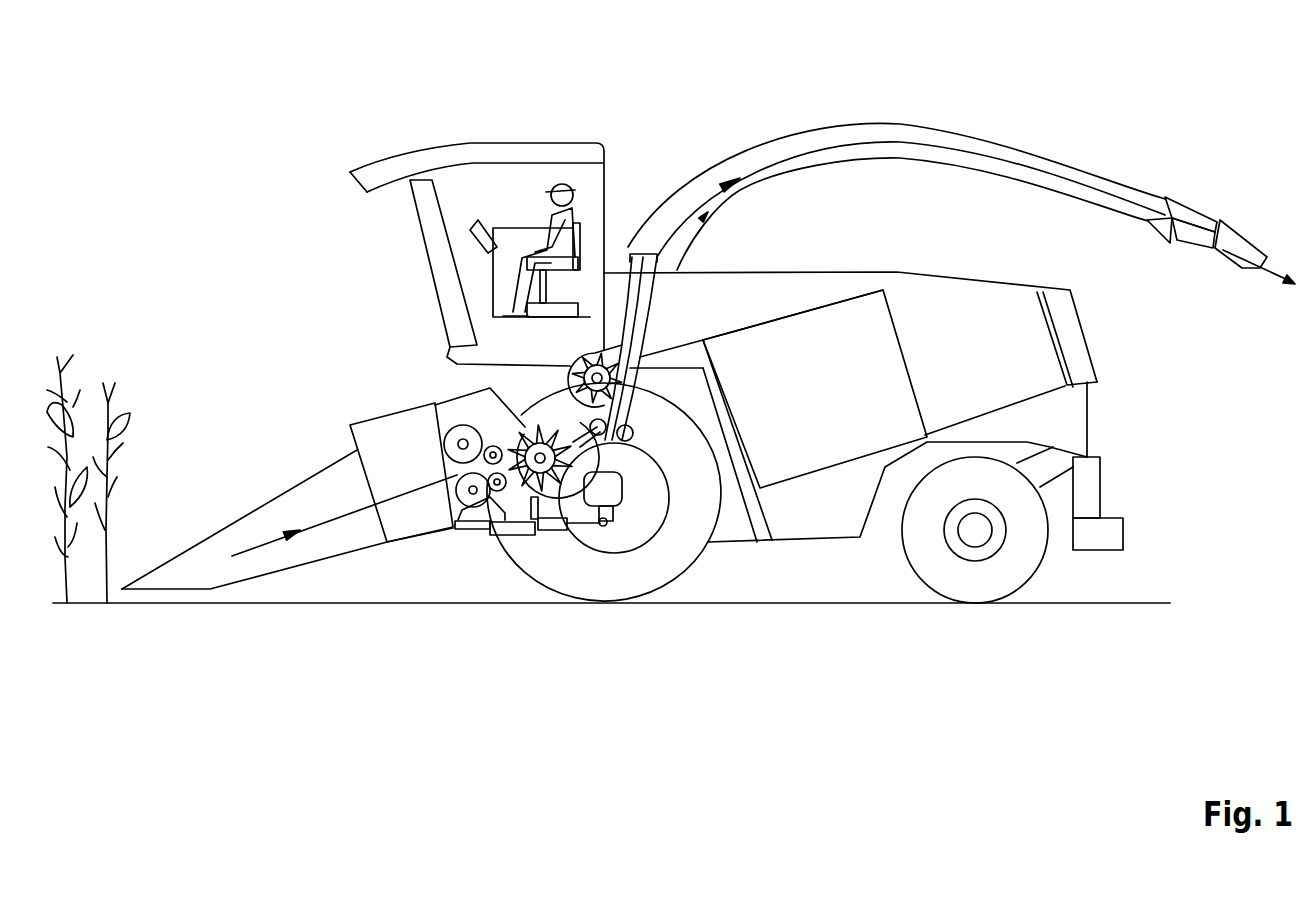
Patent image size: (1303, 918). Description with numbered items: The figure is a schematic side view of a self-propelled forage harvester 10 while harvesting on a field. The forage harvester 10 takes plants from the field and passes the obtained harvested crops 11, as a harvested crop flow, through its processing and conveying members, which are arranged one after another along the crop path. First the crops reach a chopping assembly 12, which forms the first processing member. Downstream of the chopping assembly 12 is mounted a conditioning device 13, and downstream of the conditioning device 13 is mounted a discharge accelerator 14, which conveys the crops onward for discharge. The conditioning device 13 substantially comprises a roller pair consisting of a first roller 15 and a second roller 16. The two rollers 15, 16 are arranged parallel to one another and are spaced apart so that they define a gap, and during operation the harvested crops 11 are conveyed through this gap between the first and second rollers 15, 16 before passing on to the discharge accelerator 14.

The forage harvester 10 is at (352, 141).
The harvested crops 11 is at (252, 548).
The chopping assembly 12 is at (493, 421).
The conditioning device 13 is at (617, 448).
The discharge accelerator 14 is at (598, 376).
The first roller 15 is at (598, 432).
The second roller 16 is at (625, 441).